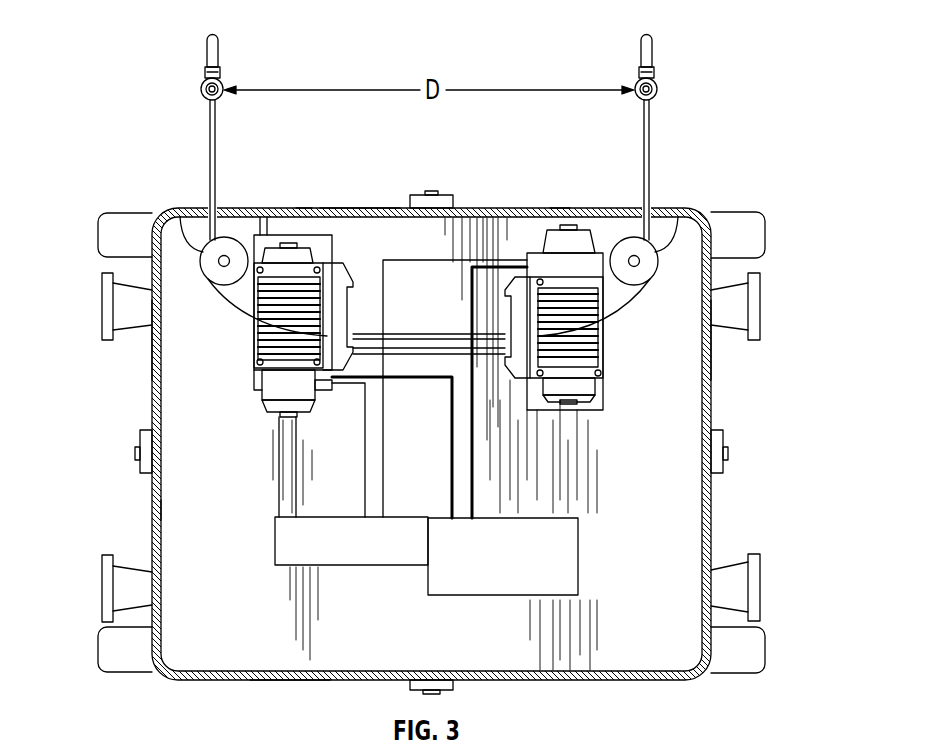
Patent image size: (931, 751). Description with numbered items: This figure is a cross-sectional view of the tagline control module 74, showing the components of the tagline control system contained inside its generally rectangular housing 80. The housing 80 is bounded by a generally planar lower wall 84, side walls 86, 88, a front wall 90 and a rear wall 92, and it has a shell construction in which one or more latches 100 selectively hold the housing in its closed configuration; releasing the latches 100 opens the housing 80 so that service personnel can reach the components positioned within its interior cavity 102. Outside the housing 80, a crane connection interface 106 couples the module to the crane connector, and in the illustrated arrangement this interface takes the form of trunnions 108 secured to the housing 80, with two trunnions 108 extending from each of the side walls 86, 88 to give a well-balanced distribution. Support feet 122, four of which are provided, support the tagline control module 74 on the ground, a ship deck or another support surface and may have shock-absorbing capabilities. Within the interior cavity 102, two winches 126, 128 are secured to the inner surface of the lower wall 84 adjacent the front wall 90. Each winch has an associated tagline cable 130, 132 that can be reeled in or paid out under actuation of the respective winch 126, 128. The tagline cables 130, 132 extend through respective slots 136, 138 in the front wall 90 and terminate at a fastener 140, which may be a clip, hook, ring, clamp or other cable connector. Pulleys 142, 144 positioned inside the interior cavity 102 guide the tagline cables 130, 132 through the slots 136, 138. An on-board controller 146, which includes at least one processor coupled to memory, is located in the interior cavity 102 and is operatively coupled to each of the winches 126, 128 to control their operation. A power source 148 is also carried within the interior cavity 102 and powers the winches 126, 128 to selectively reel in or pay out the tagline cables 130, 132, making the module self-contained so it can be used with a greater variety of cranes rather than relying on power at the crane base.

The tagline control module 74 is at (148, 118).
The housing 80 is at (711, 505).
The lower wall 84 is at (180, 512).
The side wall 86 is at (711, 393).
The side wall 88 is at (152, 393).
The front wall 90 is at (360, 210).
The rear wall 92 is at (277, 681).
The latch 100 is at (140, 437).
The interior cavity 102 is at (234, 637).
The crane connection interface 106 is at (93, 296).
The trunnion 108 is at (104, 319).
The support foot 122 is at (108, 233).
The winch 126 is at (260, 400).
The winch 128 is at (603, 374).
The tagline cable 130 is at (650, 130).
The tagline cable 132 is at (216, 130).
The slot 136 is at (562, 210).
The slot 138 is at (303, 210).
The fastener 140 is at (218, 48).
The pulley 142 is at (655, 255).
The pulley 144 is at (205, 255).
The controller 146 is at (385, 566).
The power source 148 is at (497, 596).